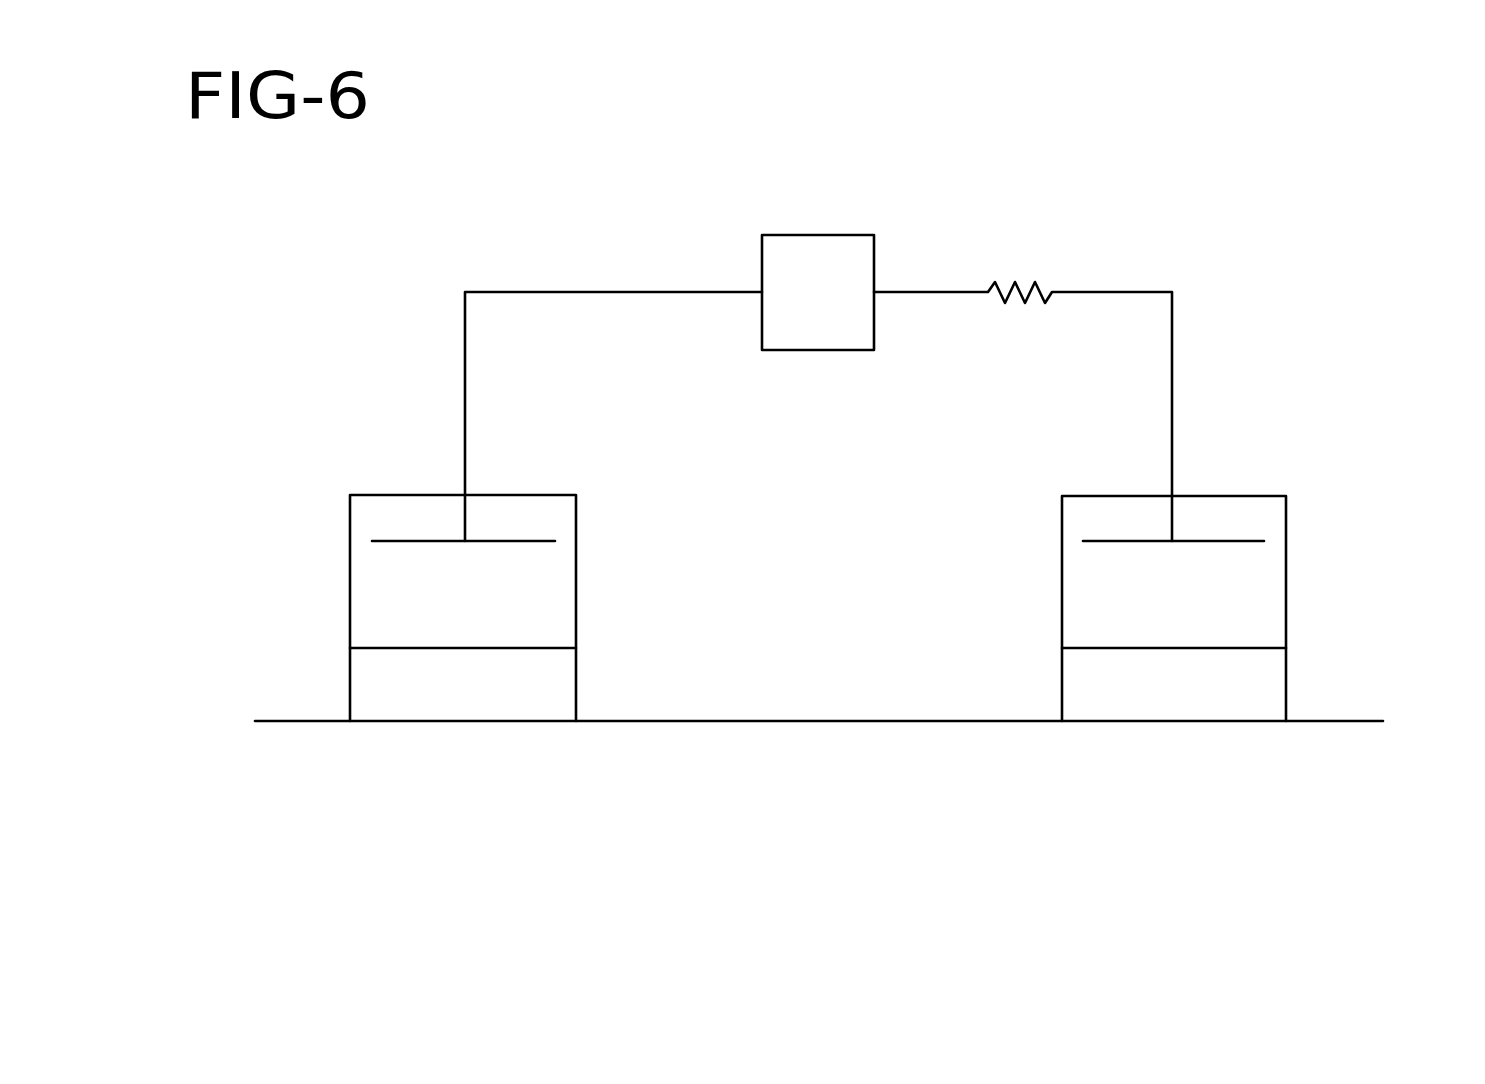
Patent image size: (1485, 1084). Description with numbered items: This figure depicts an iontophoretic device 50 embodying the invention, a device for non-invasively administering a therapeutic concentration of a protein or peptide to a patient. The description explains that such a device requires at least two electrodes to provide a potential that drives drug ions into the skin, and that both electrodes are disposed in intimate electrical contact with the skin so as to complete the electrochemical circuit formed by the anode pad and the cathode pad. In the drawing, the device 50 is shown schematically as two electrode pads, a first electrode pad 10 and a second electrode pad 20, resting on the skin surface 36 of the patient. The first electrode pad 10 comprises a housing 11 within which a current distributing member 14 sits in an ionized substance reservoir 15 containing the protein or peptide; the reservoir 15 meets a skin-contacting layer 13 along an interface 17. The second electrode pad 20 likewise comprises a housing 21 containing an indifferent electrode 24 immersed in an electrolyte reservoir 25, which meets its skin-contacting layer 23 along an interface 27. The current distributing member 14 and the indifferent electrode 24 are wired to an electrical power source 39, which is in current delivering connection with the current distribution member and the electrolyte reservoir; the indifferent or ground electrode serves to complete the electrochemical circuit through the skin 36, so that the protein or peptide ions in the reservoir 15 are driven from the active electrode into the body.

The electrochemical cell system 50 is at (622, 256).
The load 39 is at (820, 236).
The support surface 36 is at (465, 722).
The first half-cell 10 is at (489, 557).
The first container 11 is at (350, 522).
The first electrode 14 is at (465, 515).
The first electrolyte 15 is at (378, 575).
The first porous layer 13 is at (367, 685).
The first interface 17 is at (548, 648).
The second half-cell 20 is at (1197, 557).
The second container 21 is at (1060, 522).
The second electrode 24 is at (1172, 515).
The second electrolyte 25 is at (1088, 575).
The second porous layer 23 is at (1078, 685).
The second interface 27 is at (1260, 648).